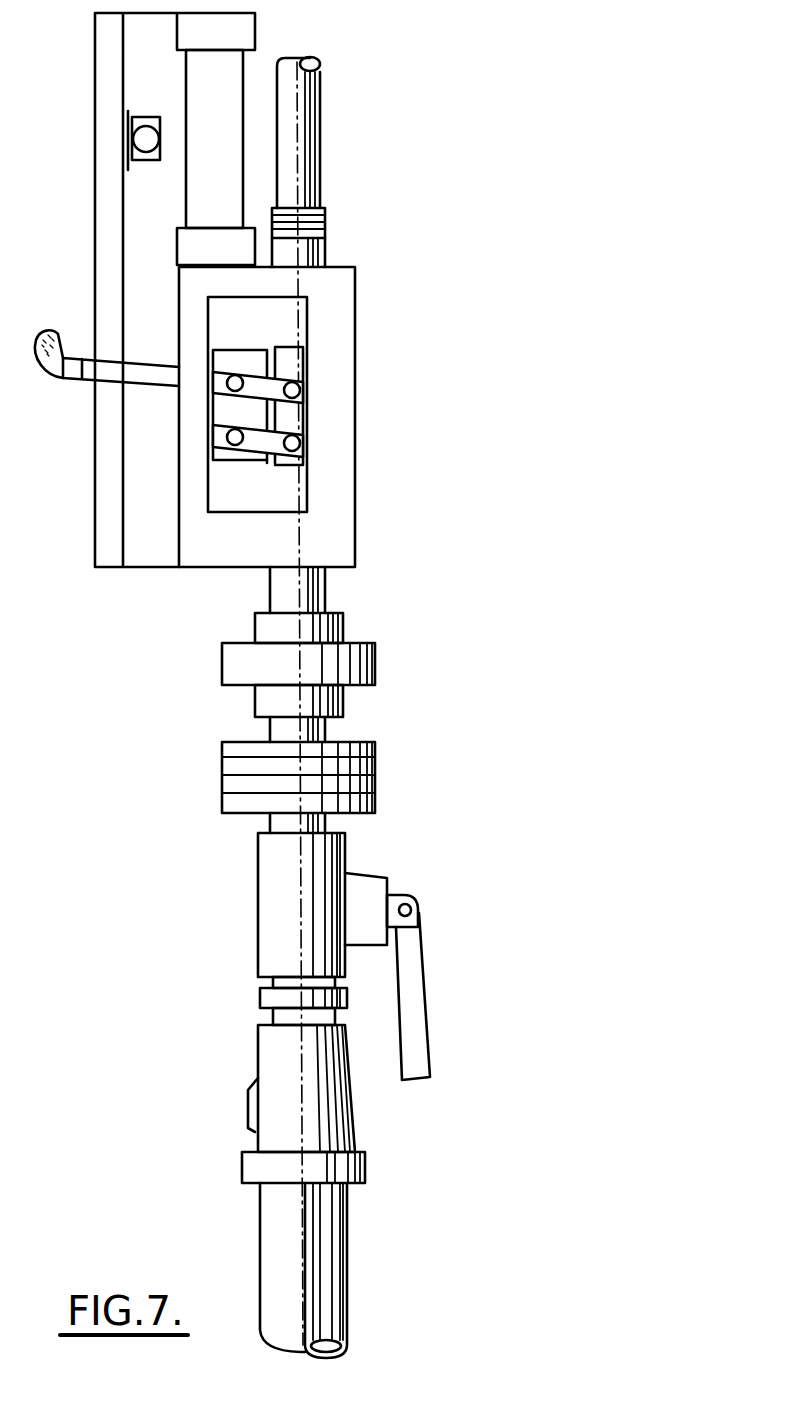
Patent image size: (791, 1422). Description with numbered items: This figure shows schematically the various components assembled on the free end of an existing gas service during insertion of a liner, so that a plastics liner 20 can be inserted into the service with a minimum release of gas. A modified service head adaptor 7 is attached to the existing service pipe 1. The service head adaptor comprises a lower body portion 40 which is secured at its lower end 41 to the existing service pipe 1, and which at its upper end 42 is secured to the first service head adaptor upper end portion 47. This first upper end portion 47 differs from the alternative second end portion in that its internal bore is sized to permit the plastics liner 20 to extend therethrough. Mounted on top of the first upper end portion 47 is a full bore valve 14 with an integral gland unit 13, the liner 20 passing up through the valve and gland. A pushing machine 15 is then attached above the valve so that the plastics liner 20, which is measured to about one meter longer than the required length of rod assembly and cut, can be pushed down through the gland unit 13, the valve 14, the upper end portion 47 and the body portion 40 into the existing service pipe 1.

The existing service pipe 1 is at (285, 1303).
The service head adaptor 7 is at (321, 1094).
The integral gland unit 13 is at (375, 665).
The full bore valve 14 is at (293, 923).
The pushing machine 15 is at (212, 532).
The plastics liner 20 is at (300, 125).
The lower body portion 40 is at (310, 1113).
The lower end 41 is at (362, 1135).
The upper end 42 is at (272, 1038).
The first service head adaptor upper end portion 47 is at (265, 1000).